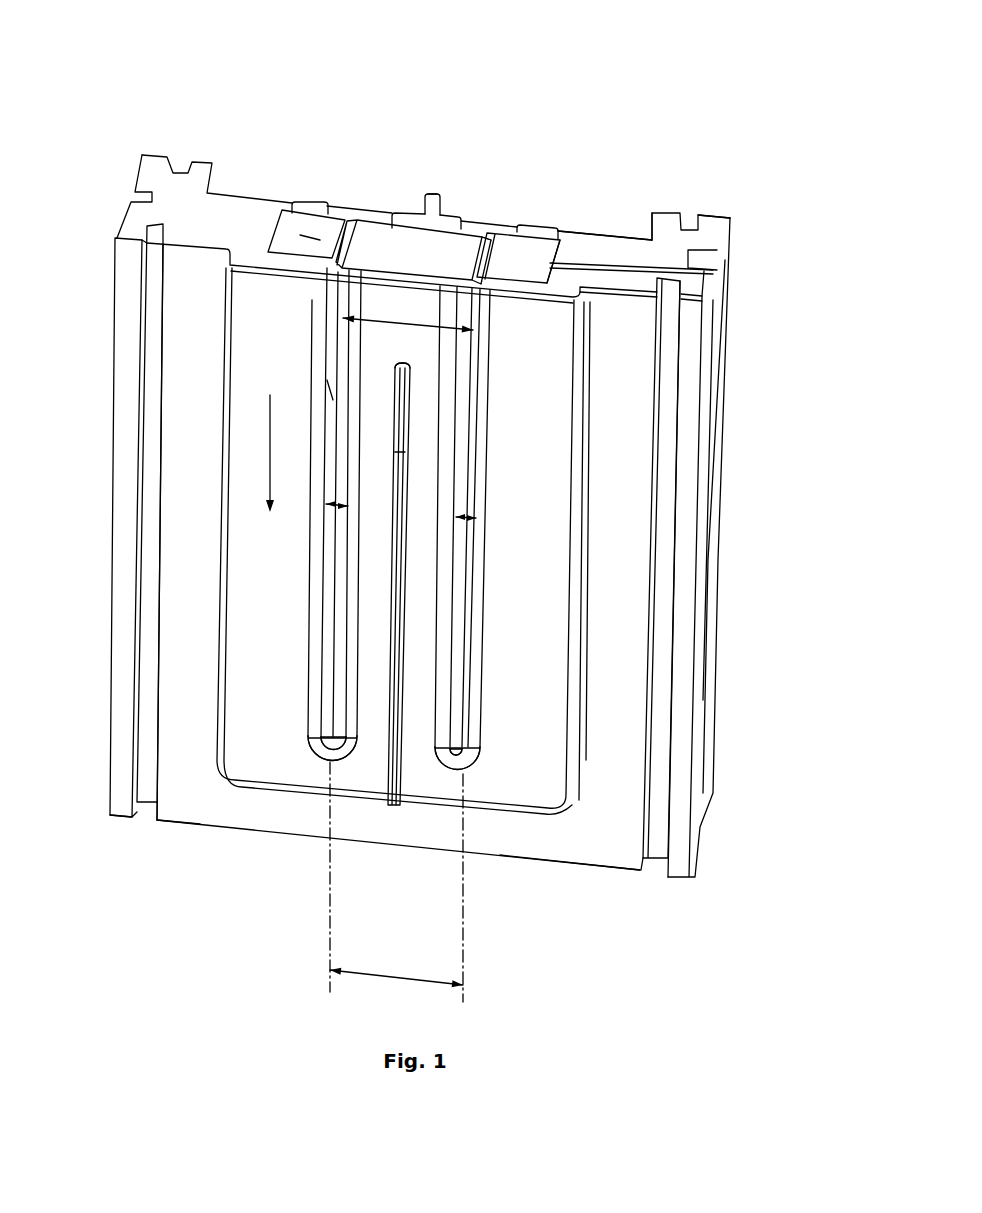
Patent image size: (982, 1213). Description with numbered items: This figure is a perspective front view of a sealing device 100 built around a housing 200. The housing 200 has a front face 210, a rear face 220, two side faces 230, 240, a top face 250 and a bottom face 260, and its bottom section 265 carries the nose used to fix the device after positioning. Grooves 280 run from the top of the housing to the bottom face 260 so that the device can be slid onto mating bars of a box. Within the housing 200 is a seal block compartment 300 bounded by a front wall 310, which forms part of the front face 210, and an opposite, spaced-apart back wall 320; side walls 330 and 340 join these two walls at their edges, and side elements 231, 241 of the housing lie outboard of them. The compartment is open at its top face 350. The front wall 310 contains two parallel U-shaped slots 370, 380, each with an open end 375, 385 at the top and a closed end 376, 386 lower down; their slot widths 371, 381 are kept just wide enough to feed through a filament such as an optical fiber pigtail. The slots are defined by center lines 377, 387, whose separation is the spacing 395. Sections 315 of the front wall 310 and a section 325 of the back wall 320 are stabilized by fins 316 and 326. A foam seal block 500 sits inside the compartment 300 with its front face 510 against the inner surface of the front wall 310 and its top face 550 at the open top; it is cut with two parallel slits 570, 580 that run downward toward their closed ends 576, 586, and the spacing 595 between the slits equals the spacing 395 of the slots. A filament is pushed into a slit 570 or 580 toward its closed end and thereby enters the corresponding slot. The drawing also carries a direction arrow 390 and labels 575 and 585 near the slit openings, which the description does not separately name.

The sealing device 100 is at (144, 27).
The housing 200 is at (729, 545).
The front face 210 is at (604, 853).
The rear face 220 is at (619, 222).
The side face 230 is at (113, 383).
The side element 231 is at (175, 202).
The side face 240 is at (727, 460).
The side element 241 is at (684, 250).
The top face 250 is at (656, 231).
The bottom face 260 is at (169, 837).
The bottom section 265 is at (98, 796).
The grooves 280 is at (175, 172).
The seal block compartment 300 is at (302, 287).
The front wall 310 is at (253, 762).
The sections of the front wall 315 is at (422, 353).
The fins 316 is at (405, 498).
The back wall 320 is at (553, 240).
The section of the back wall 325 is at (441, 212).
The fins 326 is at (433, 193).
The side wall 330 is at (268, 240).
The side wall 340 is at (546, 278).
The top face 350 is at (317, 222).
The slot 370 is at (335, 750).
The slot width 371 is at (328, 506).
The open end 375 is at (356, 218).
The closed end 376 is at (323, 748).
The center line 377 is at (328, 960).
The slot 380 is at (466, 770).
The slot width 381 is at (478, 518).
The open end 385 is at (492, 302).
The closed end 386 is at (468, 775).
The center line 387 is at (466, 975).
The insertion direction 390 is at (270, 432).
The spacing 395 is at (396, 969).
The seal block 500 is at (303, 233).
The front face 510 is at (332, 392).
The top face 550 is at (690, 260).
The slit 570 is at (335, 543).
The busbar plate 575 is at (374, 222).
The closed end 576 is at (330, 734).
The slit 580 is at (472, 664).
The connector 585 is at (479, 236).
The closed end 586 is at (470, 742).
The spacing 595 is at (388, 318).